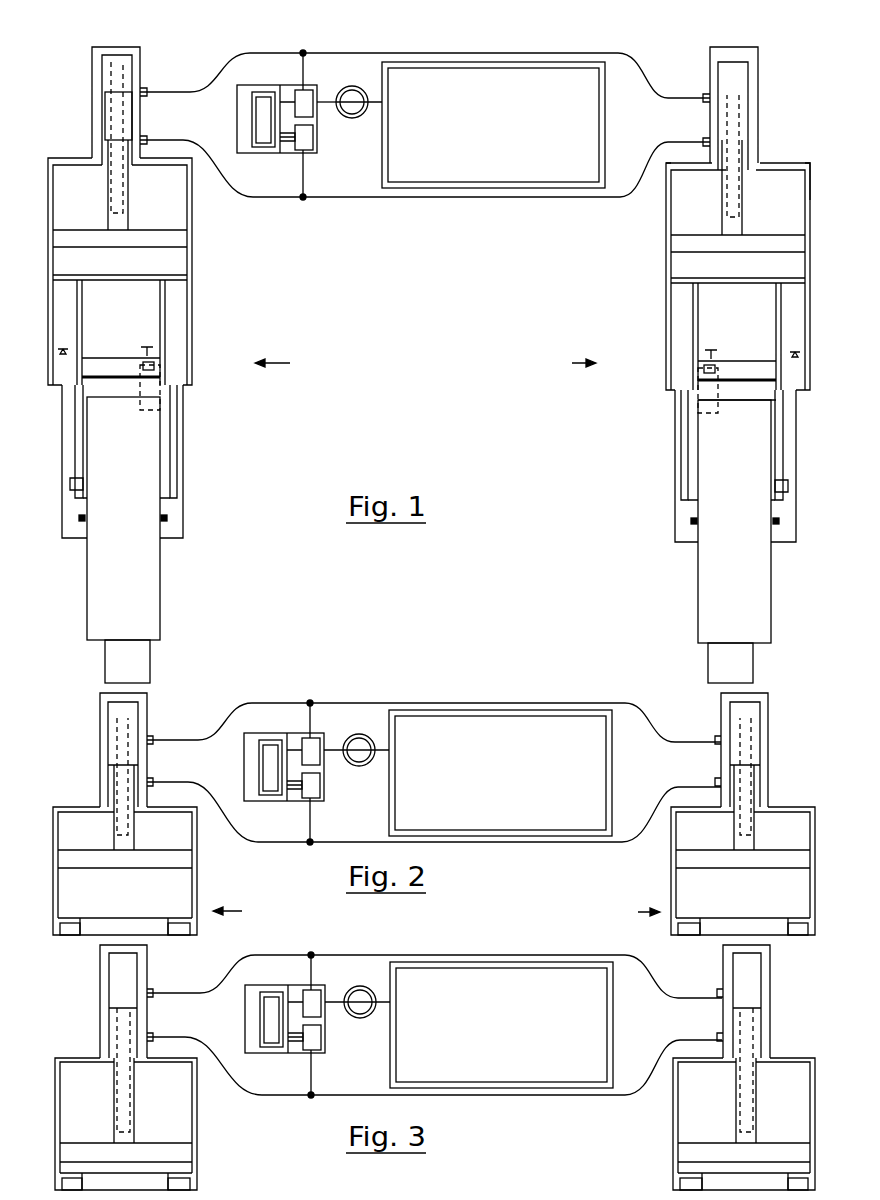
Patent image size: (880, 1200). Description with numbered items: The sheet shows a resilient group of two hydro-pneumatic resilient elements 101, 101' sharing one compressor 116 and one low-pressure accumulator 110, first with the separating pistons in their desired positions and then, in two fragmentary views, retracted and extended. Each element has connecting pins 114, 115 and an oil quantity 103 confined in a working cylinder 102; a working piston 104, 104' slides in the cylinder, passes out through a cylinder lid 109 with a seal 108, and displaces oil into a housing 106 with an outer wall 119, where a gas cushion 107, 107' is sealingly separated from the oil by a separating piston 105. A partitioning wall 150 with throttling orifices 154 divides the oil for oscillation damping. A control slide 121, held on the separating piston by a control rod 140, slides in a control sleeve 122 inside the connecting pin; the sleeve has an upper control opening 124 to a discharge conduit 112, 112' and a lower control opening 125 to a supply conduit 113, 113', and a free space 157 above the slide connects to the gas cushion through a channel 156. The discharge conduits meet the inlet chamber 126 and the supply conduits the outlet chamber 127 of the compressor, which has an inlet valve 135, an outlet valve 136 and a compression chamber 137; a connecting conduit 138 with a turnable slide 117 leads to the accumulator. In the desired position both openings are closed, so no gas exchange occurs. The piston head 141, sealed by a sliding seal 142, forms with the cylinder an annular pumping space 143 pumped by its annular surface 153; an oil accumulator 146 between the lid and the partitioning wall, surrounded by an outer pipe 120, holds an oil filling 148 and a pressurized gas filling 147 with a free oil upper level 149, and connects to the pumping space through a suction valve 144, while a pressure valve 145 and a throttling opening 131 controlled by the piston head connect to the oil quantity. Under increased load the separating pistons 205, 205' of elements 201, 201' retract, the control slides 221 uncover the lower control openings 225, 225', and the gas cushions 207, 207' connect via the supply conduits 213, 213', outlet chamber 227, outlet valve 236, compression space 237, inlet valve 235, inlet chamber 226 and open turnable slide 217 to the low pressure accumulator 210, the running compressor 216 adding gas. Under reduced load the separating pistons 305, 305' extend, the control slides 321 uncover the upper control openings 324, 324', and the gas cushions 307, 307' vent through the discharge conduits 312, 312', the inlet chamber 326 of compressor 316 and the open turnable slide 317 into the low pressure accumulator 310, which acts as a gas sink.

In FIG. 1, the hydro-pneumatic resilient element 101 is at (291, 364).
In FIG. 1, the hydro-pneumatic resilient element 101' is at (555, 364).
In FIG. 1, the working cylinder 102 is at (718, 299).
In FIG. 1, the oil quantity 103 is at (690, 263).
In FIG. 1, the working piston 104 is at (168, 540).
In FIG. 1, the working piston 104' is at (688, 521).
In FIG. 1, the separating piston 105 is at (165, 249).
In FIG. 1, the housing 106 is at (665, 199).
In FIG. 1, the gas cushion 107 is at (147, 271).
In FIG. 1, the gas cushion 107' is at (709, 229).
In FIG. 1, the seal 108 is at (168, 519).
In FIG. 1, the cylinder lid 109 is at (172, 512).
In FIG. 1, the low-pressure accumulator 110 is at (491, 188).
In FIG. 1, the discharge conduit 112 is at (379, 49).
In FIG. 1, the discharge conduit 112' is at (658, 52).
In FIG. 1, the supply conduit 113 is at (380, 191).
In FIG. 1, the supply conduit 113' is at (639, 192).
In FIG. 1, the connecting pin 114 is at (756, 70).
In FIG. 1, the connecting pin 115 is at (736, 669).
In FIG. 1, the compressor 116 is at (246, 110).
In FIG. 1, the turnable slide 117 is at (356, 96).
In FIG. 1, the outer wall 119 is at (781, 164).
In FIG. 1, the outer pipe 120 is at (185, 445).
In FIG. 1, the control slide 121 is at (108, 128).
In FIG. 1, the control sleeve 122 is at (101, 101).
In FIG. 1, the upper control opening 124 is at (143, 89).
In FIG. 1, the lower control opening 125 is at (137, 142).
In FIG. 1, the inlet chamber 126 is at (306, 92).
In FIG. 1, the outlet chamber 127 is at (306, 141).
In FIG. 1, the throttling opening 131 is at (162, 400).
In FIG. 1, the inlet valve 135 is at (289, 100).
In FIG. 1, the outlet valve 136 is at (305, 147).
In FIG. 1, the compression chamber 137 is at (288, 131).
In FIG. 1, the connecting conduit 138 is at (328, 100).
In FIG. 1, the control rod 140 is at (745, 201).
In FIG. 1, the piston head 141 is at (720, 397).
In FIG. 1, the sliding seal 142 is at (700, 381).
In FIG. 1, the annular pumping space 143 is at (705, 441).
In FIG. 1, the suction valve 144 is at (693, 494).
In FIG. 1, the pressure valve 145 is at (153, 368).
In FIG. 1, the oil accumulator 146 is at (686, 335).
In FIG. 1, the gas filling 147 is at (176, 322).
In FIG. 1, the oil filling 148 is at (173, 473).
In FIG. 1, the free oil upper level 149 is at (172, 351).
In FIG. 1, the partitioning wall 150 is at (173, 283).
In FIG. 1, the annular surface 153 is at (735, 403).
In FIG. 1, the throttling orifices 154 is at (143, 279).
In FIG. 1, the channel 156 is at (114, 196).
In FIG. 1, the free space 157 is at (113, 70).
In FIG. 2, the resilient element 201 is at (247, 911).
In FIG. 2, the resilient element 201' is at (627, 913).
In FIG. 2, the separating piston 205 is at (159, 892).
In FIG. 2, the separating piston 205' is at (715, 892).
In FIG. 2, the gas cushion 207 is at (157, 871).
In FIG. 2, the gas cushion 207' is at (717, 871).
In FIG. 2, the low pressure accumulator 210 is at (500, 836).
In FIG. 2, the supply conduit 213 is at (384, 832).
In FIG. 2, the supply conduit 213' is at (643, 836).
In FIG. 2, the compressor 216 is at (253, 755).
In FIG. 2, the turnable slide 217 is at (365, 743).
In FIG. 2, the control slide 221 is at (113, 736).
In FIG. 2, the lower control opening 225 is at (169, 761).
In FIG. 2, the lower control opening 225' is at (714, 771).
In FIG. 2, the inlet chamber 226 is at (313, 740).
In FIG. 2, the outlet chamber 227 is at (314, 787).
In FIG. 2, the inlet valve 235 is at (291, 748).
In FIG. 2, the outlet valve 236 is at (312, 797).
In FIG. 2, the compression space 237 is at (295, 772).
In FIG. 3, the separating piston 305 is at (164, 1162).
In FIG. 3, the separating piston 305' is at (712, 1163).
In FIG. 3, the gas cushion 307 is at (161, 1124).
In FIG. 3, the gas cushion 307' is at (714, 1124).
In FIG. 3, the low pressure accumulator 310 is at (510, 1088).
In FIG. 3, the discharge conduit 312 is at (386, 971).
In FIG. 3, the discharge conduit 312' is at (673, 976).
In FIG. 3, the compressor 316 is at (256, 1013).
In FIG. 3, the turnable slide 317 is at (367, 995).
In FIG. 3, the control slide 321 is at (113, 1031).
In FIG. 3, the upper control opening 324 is at (171, 1015).
In FIG. 3, the upper control opening 324' is at (716, 1044).
In FIG. 3, the inlet chamber 326 is at (318, 992).